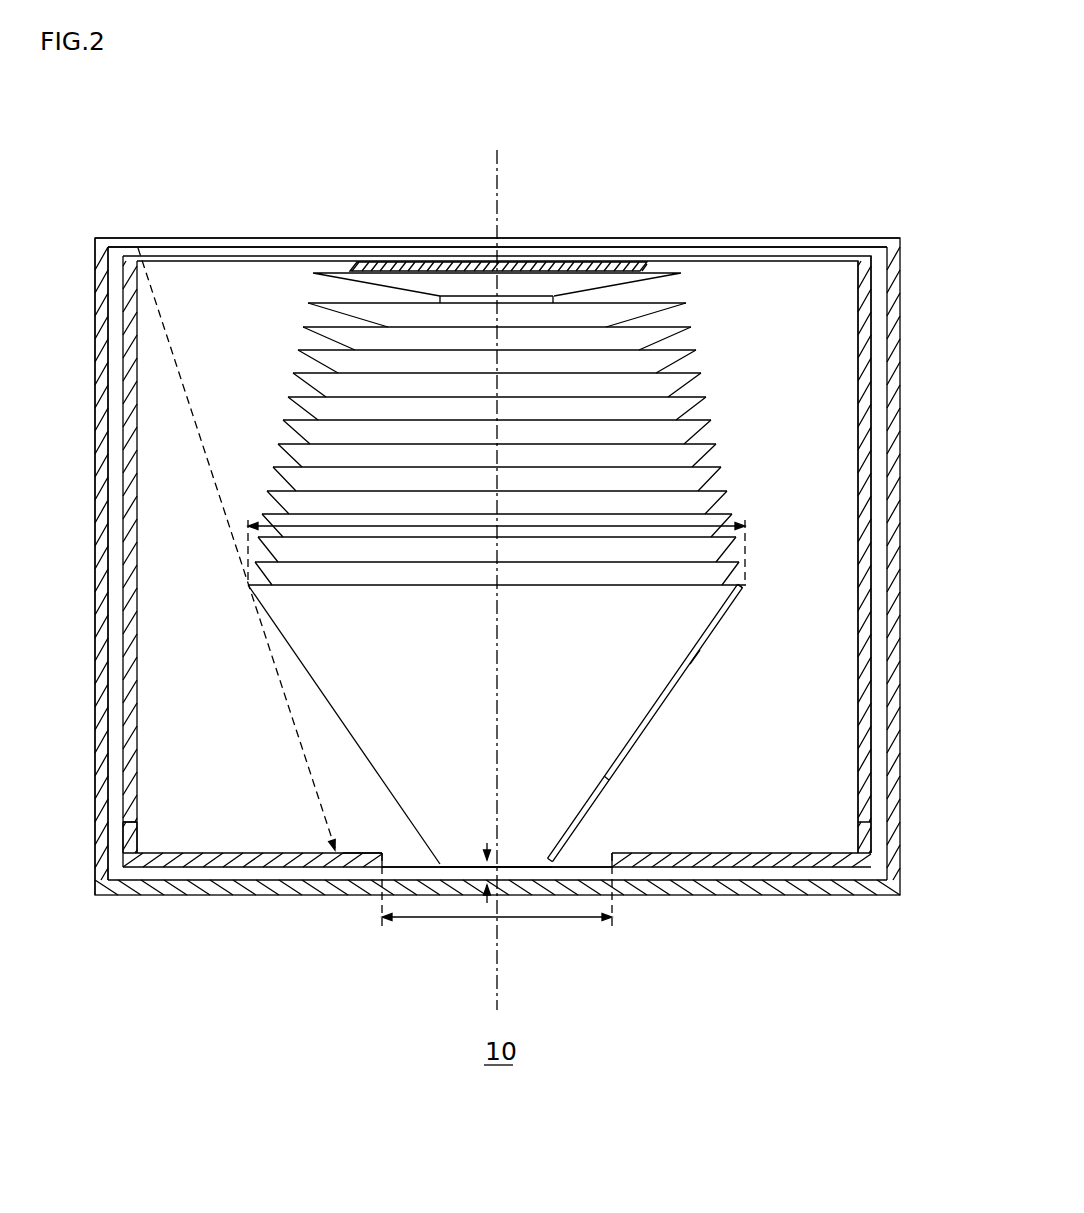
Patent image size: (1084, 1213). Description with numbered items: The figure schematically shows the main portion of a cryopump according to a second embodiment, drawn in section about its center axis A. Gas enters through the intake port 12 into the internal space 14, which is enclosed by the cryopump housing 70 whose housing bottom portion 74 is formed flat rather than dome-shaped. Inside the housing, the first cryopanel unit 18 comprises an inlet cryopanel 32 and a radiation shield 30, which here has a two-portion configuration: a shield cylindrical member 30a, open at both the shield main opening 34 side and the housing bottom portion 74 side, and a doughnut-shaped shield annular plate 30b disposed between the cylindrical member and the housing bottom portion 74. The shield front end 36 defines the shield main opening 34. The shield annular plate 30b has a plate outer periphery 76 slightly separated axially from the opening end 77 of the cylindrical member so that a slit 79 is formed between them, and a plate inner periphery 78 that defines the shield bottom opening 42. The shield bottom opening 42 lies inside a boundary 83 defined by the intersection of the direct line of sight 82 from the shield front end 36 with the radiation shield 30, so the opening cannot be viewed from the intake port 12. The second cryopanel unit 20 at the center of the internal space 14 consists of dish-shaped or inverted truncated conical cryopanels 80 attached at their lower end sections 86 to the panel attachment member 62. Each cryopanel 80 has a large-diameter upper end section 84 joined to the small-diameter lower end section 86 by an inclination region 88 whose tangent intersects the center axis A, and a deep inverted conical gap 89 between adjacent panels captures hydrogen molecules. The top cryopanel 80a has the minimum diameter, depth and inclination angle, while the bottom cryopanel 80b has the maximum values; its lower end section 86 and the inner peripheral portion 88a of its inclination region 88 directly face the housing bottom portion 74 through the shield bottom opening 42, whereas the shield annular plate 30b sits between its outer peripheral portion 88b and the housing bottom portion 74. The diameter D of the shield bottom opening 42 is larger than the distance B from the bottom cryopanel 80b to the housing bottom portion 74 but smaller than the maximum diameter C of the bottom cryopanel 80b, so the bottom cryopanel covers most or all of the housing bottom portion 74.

The intake port 12 is at (382, 236).
The internal space 14 is at (757, 812).
The first cryopanel unit 18 is at (898, 124).
The second cryopanel unit 20 is at (262, 422).
The radiation shield 30 is at (882, 282).
The shield cylindrical member 30a is at (871, 526).
The shield annular plate 30b is at (707, 860).
The inlet cryopanel 32 is at (640, 265).
The shield main opening 34 is at (323, 248).
The shield front end 36 is at (133, 257).
The shield bottom opening 42 is at (407, 862).
The panel attachment member 62 is at (556, 297).
The cryopump housing 70 is at (898, 350).
The housing bottom portion 74 is at (838, 888).
The plate outer periphery 76 is at (133, 868).
The opening end 77 is at (135, 822).
The plate inner periphery 78 is at (360, 860).
The slit 79 is at (130, 840).
The cryopanel 80 is at (697, 350).
The top cryopanel 80a is at (682, 274).
The bottom cryopanel 80b is at (312, 681).
The direct line of sight 82 is at (148, 276).
The boundary 83 is at (333, 853).
The upper end section 84 is at (746, 585).
The lower end section 86 is at (522, 868).
The inclination region 88 is at (727, 616).
The inner peripheral portion 88a is at (604, 782).
The outer peripheral portion 88b is at (682, 671).
The gap 89 is at (700, 409).
The center axis A is at (508, 152).
The distance B is at (482, 874).
The maximum diameter C is at (350, 528).
The diameter D is at (586, 919).